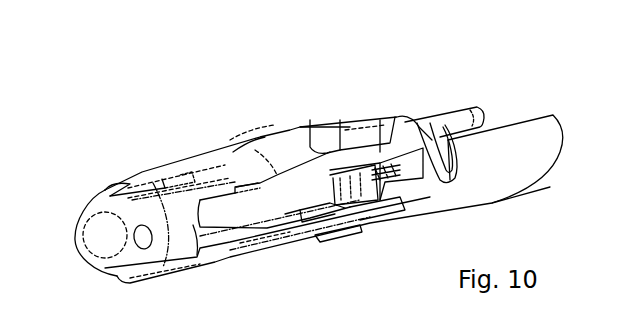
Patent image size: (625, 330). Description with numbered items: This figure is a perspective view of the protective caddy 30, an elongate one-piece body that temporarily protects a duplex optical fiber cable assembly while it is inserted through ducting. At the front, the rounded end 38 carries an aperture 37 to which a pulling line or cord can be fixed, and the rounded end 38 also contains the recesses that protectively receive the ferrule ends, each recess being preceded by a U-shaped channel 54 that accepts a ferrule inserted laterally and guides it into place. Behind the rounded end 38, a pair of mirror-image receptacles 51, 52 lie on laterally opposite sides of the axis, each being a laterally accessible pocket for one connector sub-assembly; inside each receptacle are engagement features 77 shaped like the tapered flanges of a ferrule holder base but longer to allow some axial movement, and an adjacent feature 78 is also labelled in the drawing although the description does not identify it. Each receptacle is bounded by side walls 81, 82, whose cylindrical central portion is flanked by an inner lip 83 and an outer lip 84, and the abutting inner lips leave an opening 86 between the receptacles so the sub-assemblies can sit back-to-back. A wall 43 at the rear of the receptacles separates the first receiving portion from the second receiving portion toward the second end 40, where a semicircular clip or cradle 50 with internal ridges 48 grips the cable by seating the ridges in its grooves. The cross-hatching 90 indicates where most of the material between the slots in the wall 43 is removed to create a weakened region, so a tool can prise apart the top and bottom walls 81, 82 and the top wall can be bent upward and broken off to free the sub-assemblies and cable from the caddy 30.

The protective caddy 30 is at (120, 170).
The aperture 37 is at (77, 240).
The rounded end 38 is at (92, 220).
The second end 40 is at (567, 145).
The wall 43 is at (407, 197).
The ridges 48 is at (452, 127).
The semicircular clip or cradle 50 is at (525, 128).
The receptacle 51 is at (250, 217).
The receptacle 52 is at (193, 160).
The U-shaped channel 54 is at (217, 245).
The engagement features 77 is at (318, 150).
The upper block 78 is at (352, 147).
The side wall 81 is at (297, 210).
The side wall 82 is at (252, 192).
The inner lip 83 is at (360, 213).
The outer lip 84 is at (317, 210).
The opening 86 is at (266, 211).
The weakened region 90 is at (393, 173).